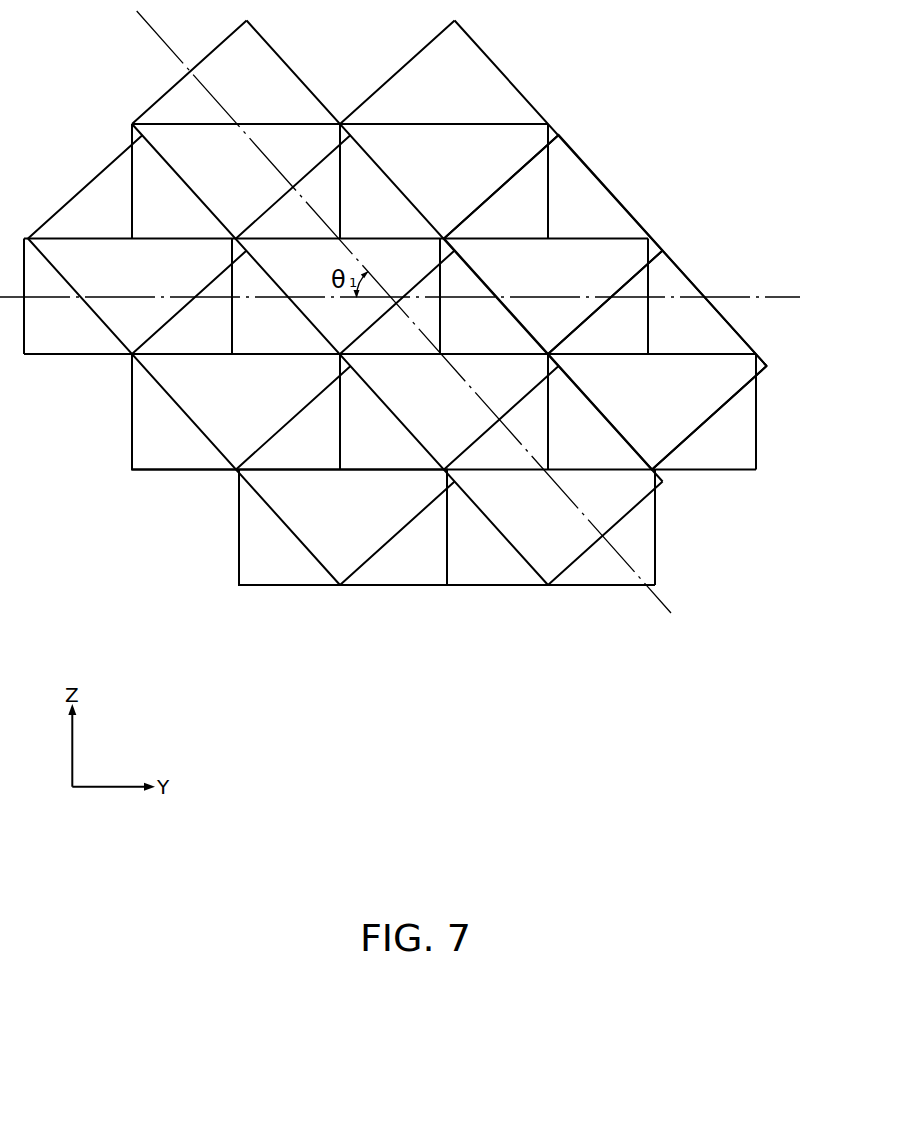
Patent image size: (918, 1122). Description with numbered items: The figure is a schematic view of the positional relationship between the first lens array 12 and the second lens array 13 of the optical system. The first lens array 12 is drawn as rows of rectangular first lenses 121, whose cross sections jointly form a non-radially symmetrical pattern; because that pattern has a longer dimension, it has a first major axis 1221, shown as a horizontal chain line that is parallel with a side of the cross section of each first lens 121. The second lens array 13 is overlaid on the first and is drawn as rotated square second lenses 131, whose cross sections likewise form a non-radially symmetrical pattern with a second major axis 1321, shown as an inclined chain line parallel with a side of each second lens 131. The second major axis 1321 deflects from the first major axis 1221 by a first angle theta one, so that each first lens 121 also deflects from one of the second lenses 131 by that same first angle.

The first lens array 12 is at (52, 357).
The first lens 121 is at (167, 450).
The first major axis 1221 is at (747, 297).
The second lens array 13 is at (471, 35).
The second lens 131 is at (573, 203).
The second major axis 1321 is at (660, 597).